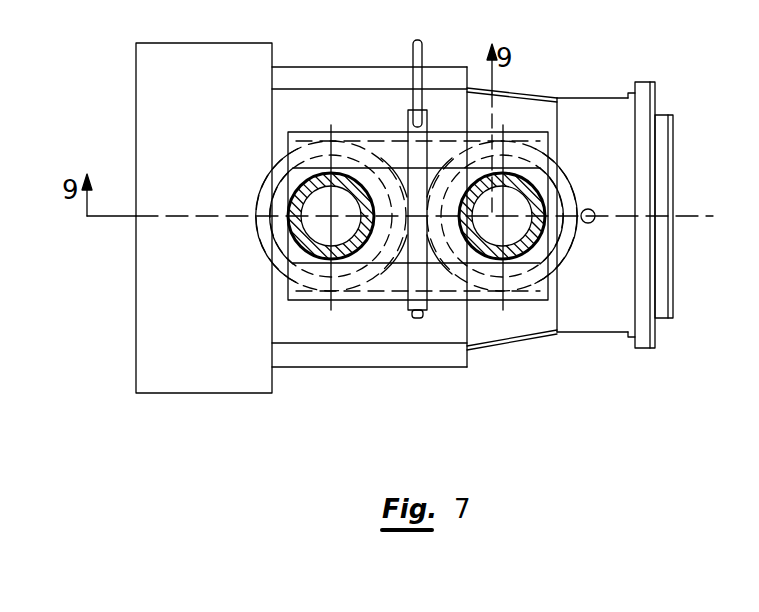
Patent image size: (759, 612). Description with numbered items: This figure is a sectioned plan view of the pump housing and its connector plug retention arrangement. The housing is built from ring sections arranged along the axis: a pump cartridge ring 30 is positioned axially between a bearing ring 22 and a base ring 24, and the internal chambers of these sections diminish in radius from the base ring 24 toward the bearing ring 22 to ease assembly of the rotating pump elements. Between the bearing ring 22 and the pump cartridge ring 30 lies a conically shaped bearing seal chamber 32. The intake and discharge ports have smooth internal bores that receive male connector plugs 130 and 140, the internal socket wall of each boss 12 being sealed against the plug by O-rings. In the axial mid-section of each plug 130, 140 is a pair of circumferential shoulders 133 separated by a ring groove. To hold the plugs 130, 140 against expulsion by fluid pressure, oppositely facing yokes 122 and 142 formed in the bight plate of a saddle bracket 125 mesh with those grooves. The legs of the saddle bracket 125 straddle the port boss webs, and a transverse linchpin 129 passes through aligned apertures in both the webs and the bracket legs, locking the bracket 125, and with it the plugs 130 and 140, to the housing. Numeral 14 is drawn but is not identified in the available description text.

The boss 12 is at (262, 200).
The housing outer wall 14 is at (572, 196).
The bearing ring 22 is at (613, 307).
The base ring 24 is at (222, 358).
The pump cartridge ring 30 is at (389, 340).
The bearing seal chamber 32 is at (496, 329).
The yoke 122 is at (296, 178).
The saddle bracket 125 is at (445, 318).
The linchpin 129 is at (416, 320).
The male connector plug 130 is at (244, 265).
The circumferential shoulder 133 is at (273, 228).
The male connector plug 140 is at (598, 242).
The yoke 142 is at (583, 210).